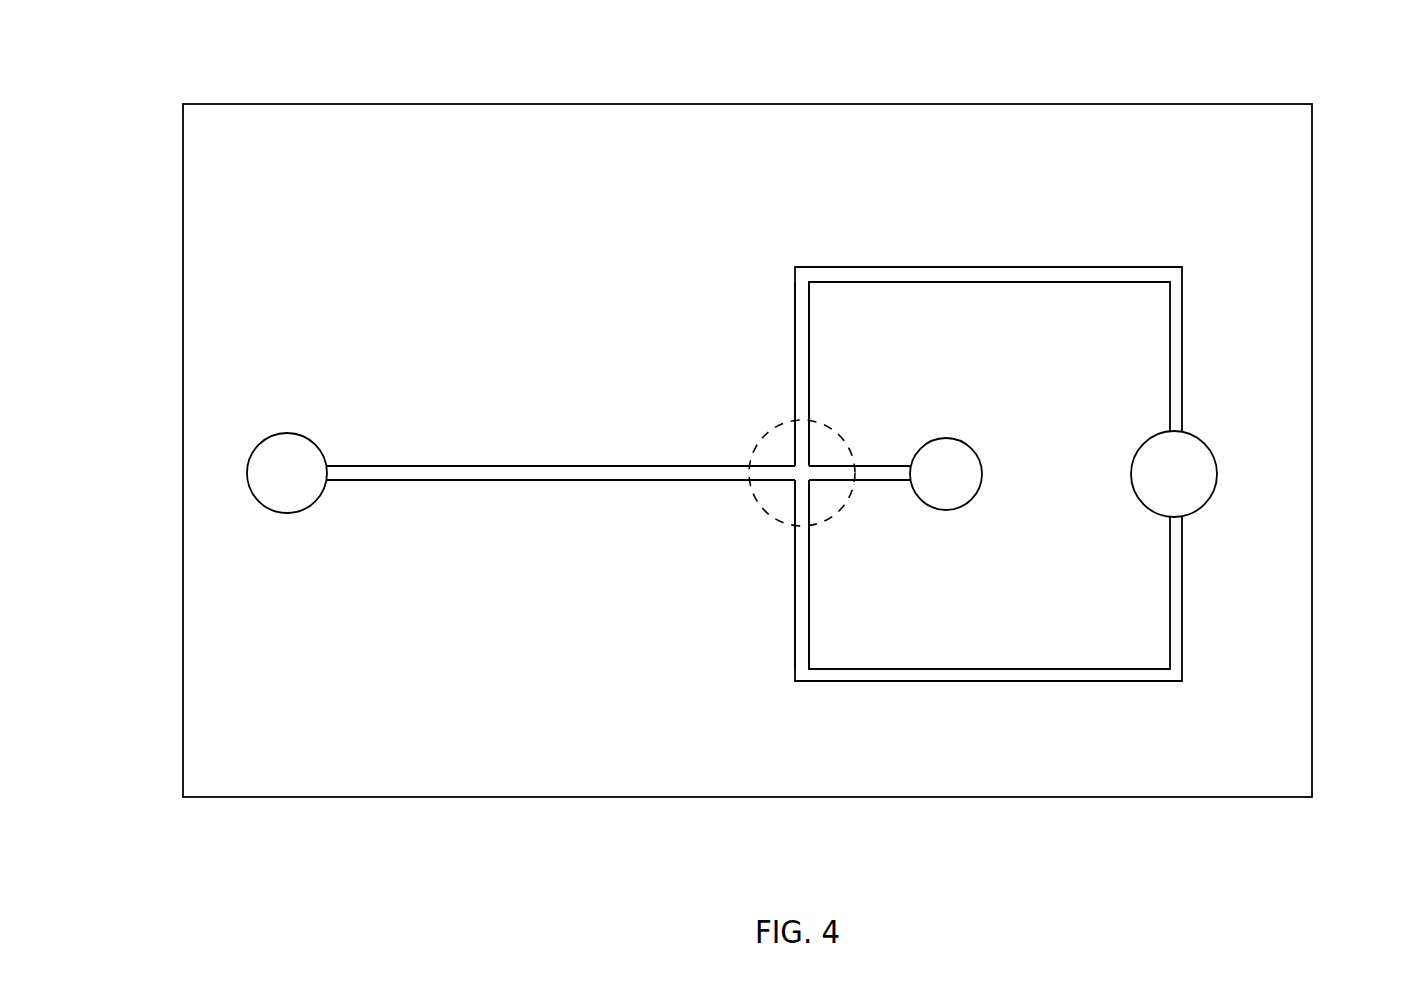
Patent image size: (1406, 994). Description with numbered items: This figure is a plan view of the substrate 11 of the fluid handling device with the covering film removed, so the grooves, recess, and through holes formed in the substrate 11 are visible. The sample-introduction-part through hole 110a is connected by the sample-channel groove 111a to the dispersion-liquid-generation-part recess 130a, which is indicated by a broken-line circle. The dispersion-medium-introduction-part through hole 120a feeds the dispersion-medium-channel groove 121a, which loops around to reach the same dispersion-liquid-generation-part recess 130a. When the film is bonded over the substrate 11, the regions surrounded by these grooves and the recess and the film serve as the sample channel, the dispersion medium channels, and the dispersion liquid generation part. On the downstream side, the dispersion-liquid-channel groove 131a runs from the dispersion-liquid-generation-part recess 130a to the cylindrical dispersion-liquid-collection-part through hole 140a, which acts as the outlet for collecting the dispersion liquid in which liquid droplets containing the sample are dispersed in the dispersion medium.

The substrate 11 is at (1337, 53).
The sample-introduction-part through hole 110a is at (950, 497).
The sample-channel groove 111a is at (832, 483).
The dispersion-medium-introduction-part through hole 120a is at (1208, 460).
The dispersion-medium-channel groove 121a is at (1146, 681).
The dispersion-liquid-generation-part recess 130a is at (800, 484).
The dispersion-liquid-channel groove 131a is at (550, 476).
The dispersion-liquid-collection-part through hole 140a is at (277, 462).